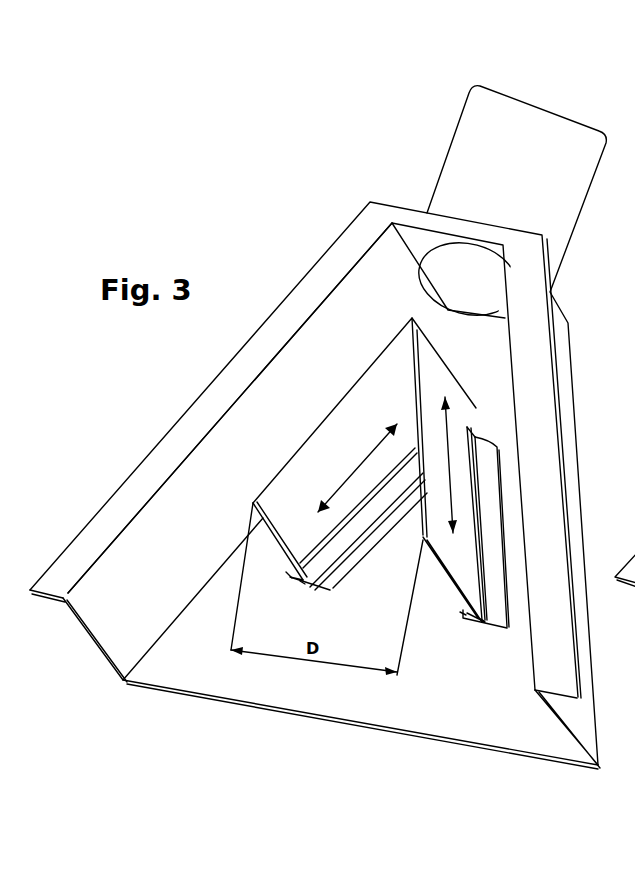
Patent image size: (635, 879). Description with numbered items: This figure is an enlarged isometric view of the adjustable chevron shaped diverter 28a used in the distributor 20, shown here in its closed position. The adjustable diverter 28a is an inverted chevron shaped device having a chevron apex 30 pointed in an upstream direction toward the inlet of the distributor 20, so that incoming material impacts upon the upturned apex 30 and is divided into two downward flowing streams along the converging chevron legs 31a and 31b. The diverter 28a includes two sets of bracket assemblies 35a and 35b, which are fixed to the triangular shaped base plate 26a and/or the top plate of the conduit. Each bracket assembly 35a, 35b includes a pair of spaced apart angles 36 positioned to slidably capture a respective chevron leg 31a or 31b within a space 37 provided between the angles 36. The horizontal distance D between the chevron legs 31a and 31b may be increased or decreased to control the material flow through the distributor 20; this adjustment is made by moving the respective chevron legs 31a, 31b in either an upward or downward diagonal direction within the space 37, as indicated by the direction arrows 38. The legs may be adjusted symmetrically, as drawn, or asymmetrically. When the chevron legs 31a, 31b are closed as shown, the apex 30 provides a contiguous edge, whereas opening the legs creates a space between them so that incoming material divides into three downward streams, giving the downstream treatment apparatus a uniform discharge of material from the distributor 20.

The distributor 20 is at (288, 200).
The base plate 26a is at (190, 667).
The adjustable diverter 28a is at (322, 423).
The chevron apex 30 is at (438, 356).
The chevron leg 31a is at (463, 552).
The chevron leg 31b is at (308, 487).
The bracket assembly 35a is at (495, 527).
The bracket assembly 35b is at (373, 530).
The angles 36 is at (283, 573).
The space 37 is at (302, 582).
The direction arrows 38 is at (443, 398).